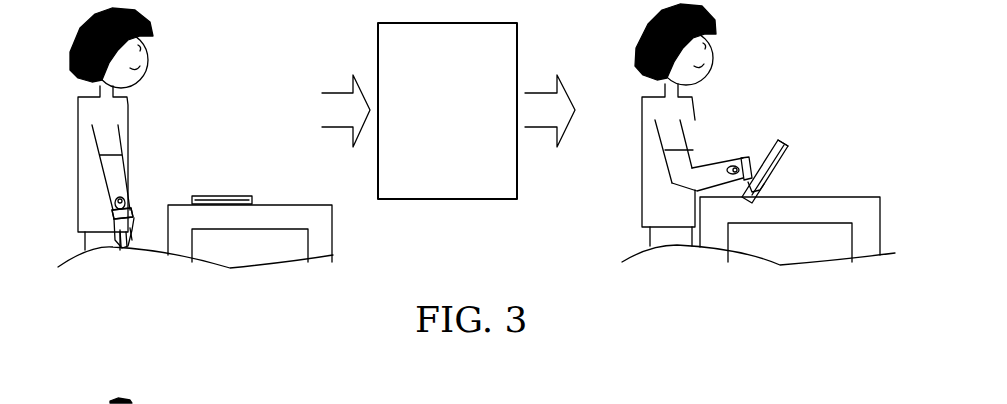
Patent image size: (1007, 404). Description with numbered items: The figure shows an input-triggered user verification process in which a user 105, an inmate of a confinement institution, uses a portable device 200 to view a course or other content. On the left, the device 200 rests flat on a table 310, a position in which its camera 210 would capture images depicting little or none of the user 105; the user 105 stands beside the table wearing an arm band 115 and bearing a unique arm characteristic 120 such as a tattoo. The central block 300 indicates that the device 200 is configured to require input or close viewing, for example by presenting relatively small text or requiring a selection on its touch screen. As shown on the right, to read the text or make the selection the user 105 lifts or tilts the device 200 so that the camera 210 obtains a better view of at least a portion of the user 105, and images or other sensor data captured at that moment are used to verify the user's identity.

The user 105 is at (90, 26).
The arm band 115 is at (132, 212).
The unique arm characteristic 120 is at (116, 200).
The device 200 is at (240, 196).
The camera 210 is at (780, 140).
The block 300 is at (378, 42).
The table 310 is at (332, 228).